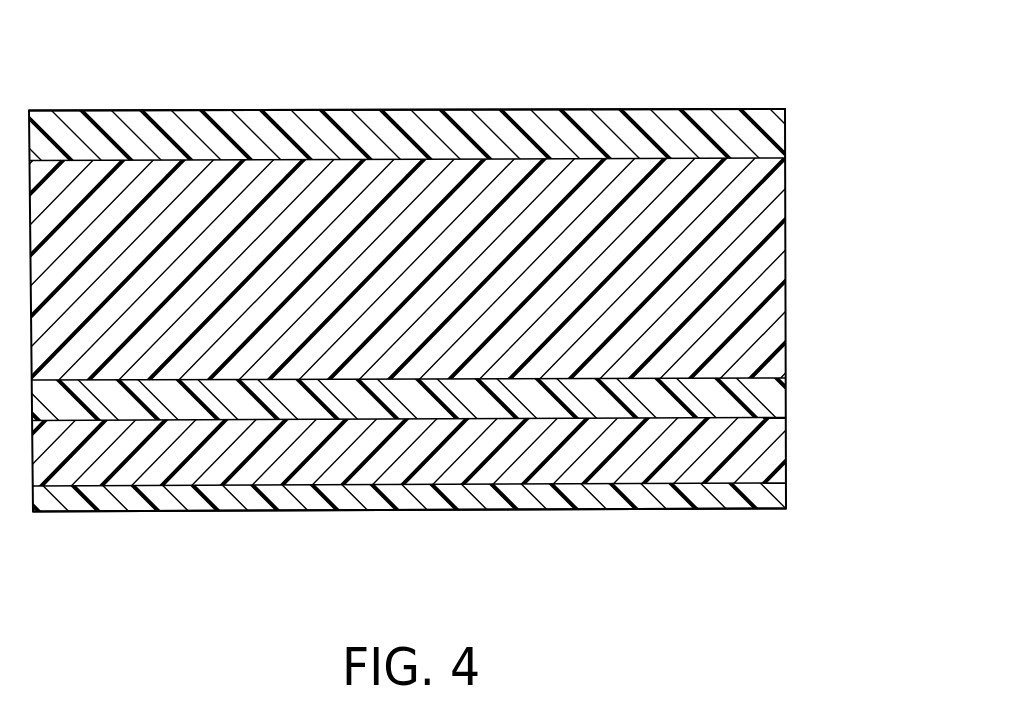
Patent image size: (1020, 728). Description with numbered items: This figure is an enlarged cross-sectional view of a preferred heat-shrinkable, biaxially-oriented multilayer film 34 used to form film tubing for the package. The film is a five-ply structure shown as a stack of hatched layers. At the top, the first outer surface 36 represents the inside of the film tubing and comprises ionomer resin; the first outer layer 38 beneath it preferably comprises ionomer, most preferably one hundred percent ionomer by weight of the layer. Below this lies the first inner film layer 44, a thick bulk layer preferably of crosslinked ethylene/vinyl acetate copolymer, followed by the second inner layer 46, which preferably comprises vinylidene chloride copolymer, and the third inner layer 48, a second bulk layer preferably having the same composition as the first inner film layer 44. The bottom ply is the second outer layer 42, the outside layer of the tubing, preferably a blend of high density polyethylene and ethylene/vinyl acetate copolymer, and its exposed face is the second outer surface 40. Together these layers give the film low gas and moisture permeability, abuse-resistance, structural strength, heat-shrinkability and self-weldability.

The heat-shrinkable, biaxially-oriented film 34 is at (196, 57).
The first outer surface 36 is at (520, 108).
The first outer layer 38 is at (747, 132).
The second outer surface 40 is at (633, 509).
The second outer layer 42 is at (758, 500).
The first inner film layer 44 is at (737, 248).
The second inner layer 46 is at (772, 395).
The third inner layer 48 is at (772, 455).